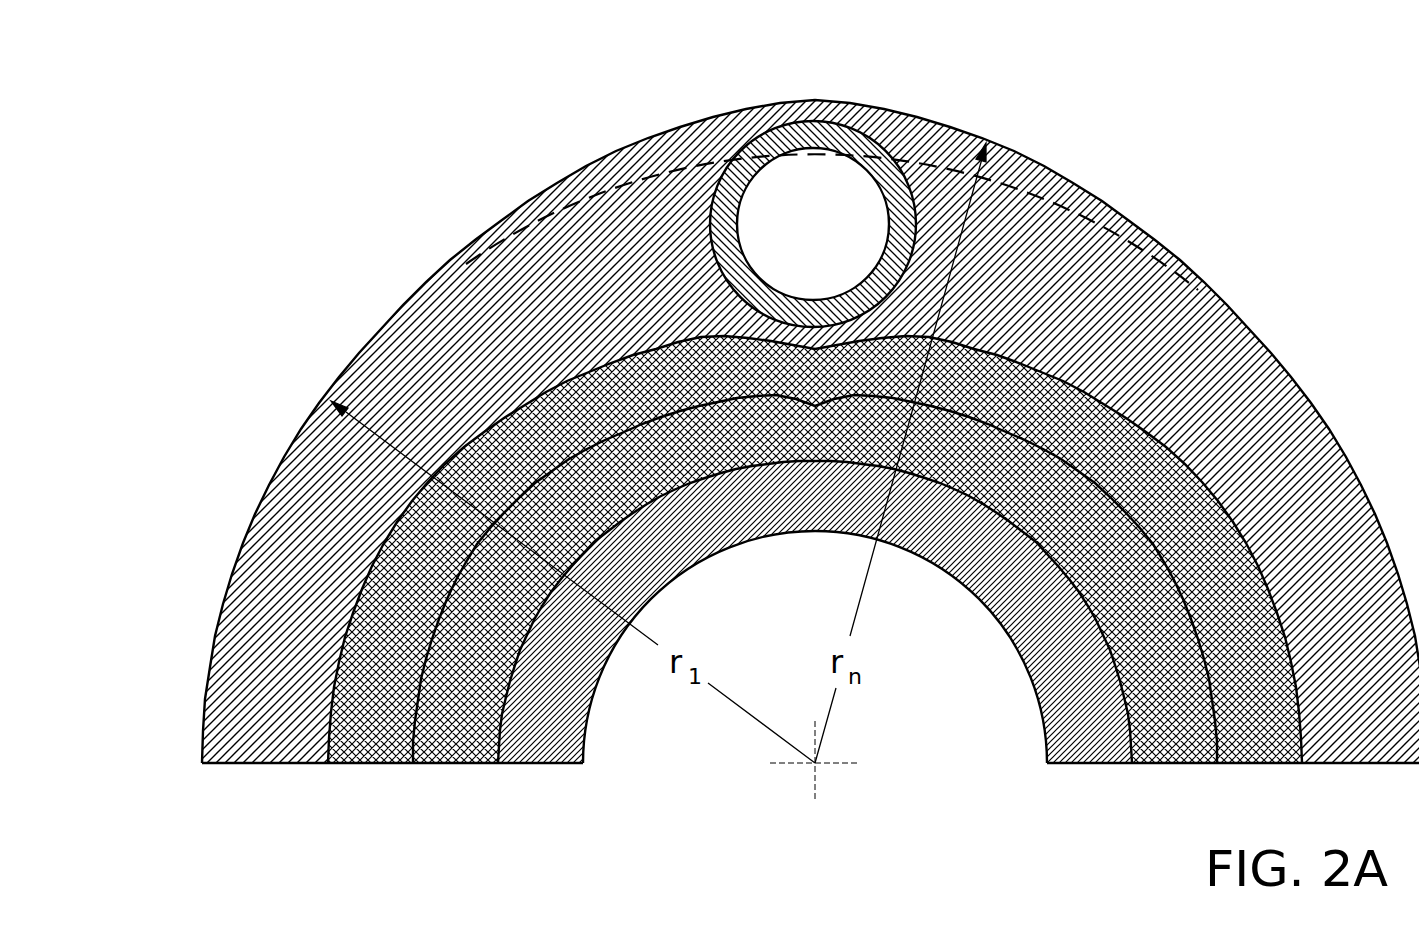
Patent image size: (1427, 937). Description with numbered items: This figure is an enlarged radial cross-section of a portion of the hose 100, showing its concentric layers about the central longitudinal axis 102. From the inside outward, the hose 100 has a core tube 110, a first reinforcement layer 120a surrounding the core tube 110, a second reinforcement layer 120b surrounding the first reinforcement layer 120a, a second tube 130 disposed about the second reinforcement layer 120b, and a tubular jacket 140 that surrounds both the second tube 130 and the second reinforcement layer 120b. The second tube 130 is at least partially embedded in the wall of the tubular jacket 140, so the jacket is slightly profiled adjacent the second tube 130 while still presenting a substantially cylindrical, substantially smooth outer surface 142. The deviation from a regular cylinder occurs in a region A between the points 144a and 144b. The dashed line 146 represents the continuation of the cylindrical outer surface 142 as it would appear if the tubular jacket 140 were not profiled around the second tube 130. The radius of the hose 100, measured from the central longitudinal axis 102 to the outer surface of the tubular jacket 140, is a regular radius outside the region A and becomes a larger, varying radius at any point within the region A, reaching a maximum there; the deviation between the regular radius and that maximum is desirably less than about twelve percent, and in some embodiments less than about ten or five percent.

The hose 100 is at (322, 119).
The central longitudinal axis 102 is at (807, 755).
The core tube 110 is at (530, 733).
The first reinforcement layer 120a is at (452, 740).
The second reinforcement layer 120b is at (360, 740).
The second tube 130 is at (842, 132).
The tubular jacket 140 is at (267, 668).
The cylindrical outer surface 142 is at (247, 502).
The point 144a is at (450, 246).
The point 144b is at (1202, 266).
The dashed line 146 is at (1099, 220).
The region A is at (605, 150).